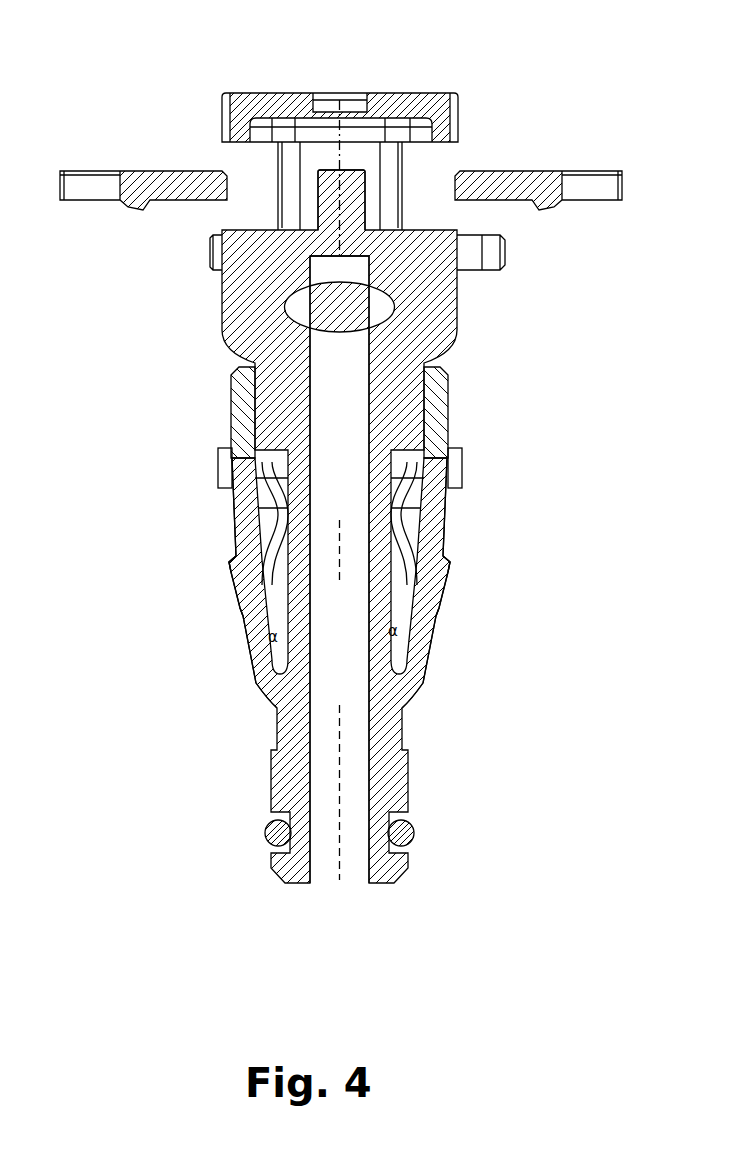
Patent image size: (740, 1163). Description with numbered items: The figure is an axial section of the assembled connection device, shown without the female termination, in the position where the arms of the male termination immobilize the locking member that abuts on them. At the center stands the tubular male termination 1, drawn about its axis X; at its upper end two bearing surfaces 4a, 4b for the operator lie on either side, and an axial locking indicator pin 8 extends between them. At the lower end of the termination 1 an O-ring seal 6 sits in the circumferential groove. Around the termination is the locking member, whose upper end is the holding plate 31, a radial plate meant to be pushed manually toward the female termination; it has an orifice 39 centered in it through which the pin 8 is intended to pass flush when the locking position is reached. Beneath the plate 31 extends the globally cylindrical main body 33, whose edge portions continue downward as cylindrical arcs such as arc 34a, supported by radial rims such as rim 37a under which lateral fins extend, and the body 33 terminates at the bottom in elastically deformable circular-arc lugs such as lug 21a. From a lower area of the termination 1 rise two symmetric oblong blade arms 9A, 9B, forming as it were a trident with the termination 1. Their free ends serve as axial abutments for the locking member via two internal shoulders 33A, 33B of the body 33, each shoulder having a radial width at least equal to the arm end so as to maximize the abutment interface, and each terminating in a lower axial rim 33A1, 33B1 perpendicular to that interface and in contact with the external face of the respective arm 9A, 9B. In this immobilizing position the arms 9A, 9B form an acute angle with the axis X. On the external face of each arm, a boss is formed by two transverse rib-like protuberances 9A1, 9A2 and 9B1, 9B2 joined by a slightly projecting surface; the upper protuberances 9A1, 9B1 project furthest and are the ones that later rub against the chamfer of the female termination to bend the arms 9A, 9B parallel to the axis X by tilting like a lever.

The tubular male termination 1 is at (217, 294).
The axial locking indicator pin 8 is at (347, 192).
The holding plate 31 is at (340, 84).
The orifice 39 is at (353, 100).
The cylindrical arc 34a is at (288, 202).
The radial rim 37a is at (512, 253).
The bearing surface 4a is at (138, 170).
The bearing surface 4b is at (526, 168).
The main body 33 is at (355, 410).
The internal shoulder 33A is at (237, 452).
The internal shoulder 33B is at (441, 450).
The lower axial rim 33A1 is at (218, 473).
The lower axial rim 33B1 is at (462, 477).
The lug 21a is at (446, 540).
The arm 9A is at (230, 663).
The upper protuberance 9A1 is at (230, 570).
The lower protuberance 9A2 is at (237, 610).
The arm 9B is at (438, 650).
The upper protuberance 9B1 is at (447, 578).
The lower protuberance 9B2 is at (438, 614).
The O-ring seal 6 is at (410, 838).
The axis X is at (337, 868).